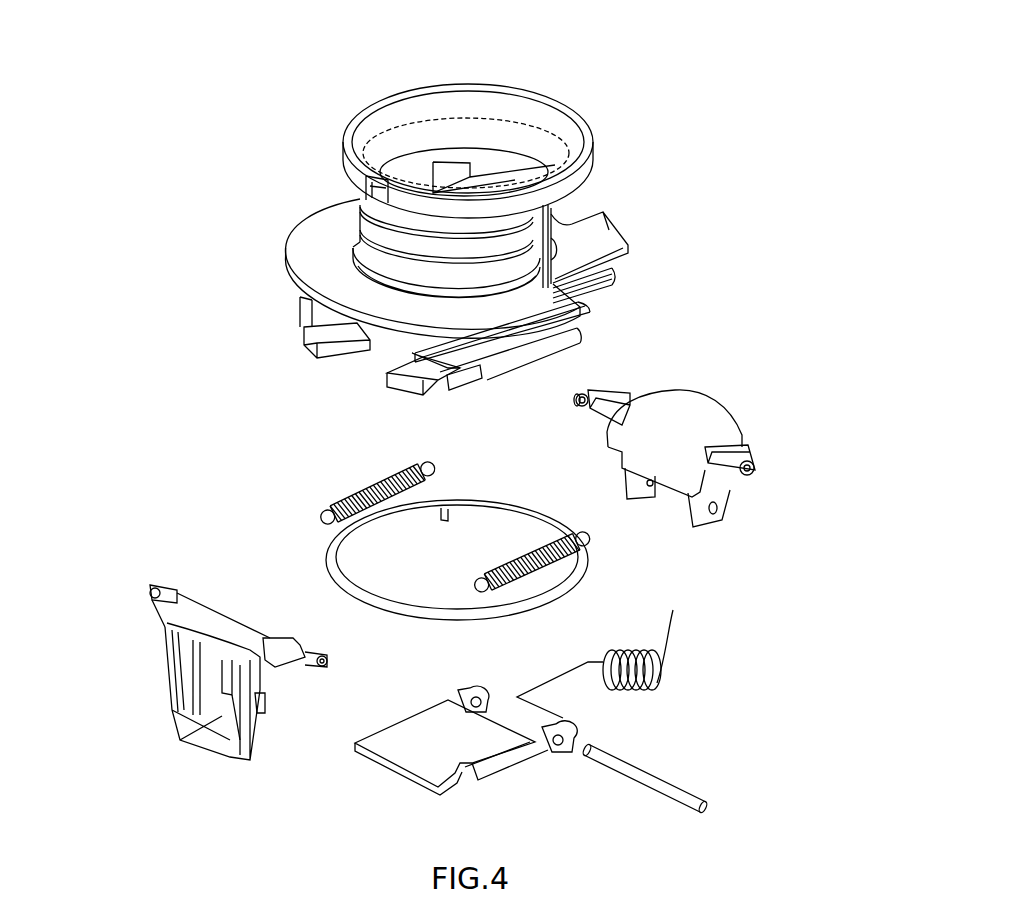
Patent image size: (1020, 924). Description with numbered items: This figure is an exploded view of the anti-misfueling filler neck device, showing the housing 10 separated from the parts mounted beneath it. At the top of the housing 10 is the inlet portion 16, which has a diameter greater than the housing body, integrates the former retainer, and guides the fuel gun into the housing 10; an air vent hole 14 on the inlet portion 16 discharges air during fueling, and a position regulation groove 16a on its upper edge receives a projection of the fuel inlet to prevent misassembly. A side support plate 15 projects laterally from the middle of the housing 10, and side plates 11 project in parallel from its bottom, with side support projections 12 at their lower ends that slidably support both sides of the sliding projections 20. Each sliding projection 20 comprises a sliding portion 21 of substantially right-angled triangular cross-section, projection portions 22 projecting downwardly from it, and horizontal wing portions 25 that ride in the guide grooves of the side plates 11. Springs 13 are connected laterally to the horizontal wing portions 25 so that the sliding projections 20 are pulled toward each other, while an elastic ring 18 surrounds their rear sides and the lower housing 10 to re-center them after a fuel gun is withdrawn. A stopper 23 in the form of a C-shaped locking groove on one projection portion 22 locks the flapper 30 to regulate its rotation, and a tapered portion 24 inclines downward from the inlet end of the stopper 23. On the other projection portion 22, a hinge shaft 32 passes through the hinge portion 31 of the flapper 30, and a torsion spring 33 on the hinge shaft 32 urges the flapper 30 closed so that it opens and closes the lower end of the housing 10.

The housing 10 is at (553, 90).
The side plate 11 is at (610, 273).
The side support projection 12 is at (320, 335).
The spring 13 is at (372, 475).
The air vent hole 14 is at (438, 165).
The side support plate 15 is at (288, 240).
The inlet portion 16 is at (583, 118).
The position regulation groove 16a is at (352, 178).
The elastic ring 18 is at (328, 555).
The sliding projection 20 is at (718, 397).
The sliding portion 21 is at (652, 445).
The projection portion 22 is at (725, 500).
The stopper 23 is at (272, 705).
The tapered portion 24 is at (258, 760).
The horizontal wing portion 25 is at (575, 400).
The flapper 30 is at (513, 763).
The hinge portion 31 is at (573, 730).
The hinge shaft 32 is at (663, 783).
The torsion spring 33 is at (622, 650).